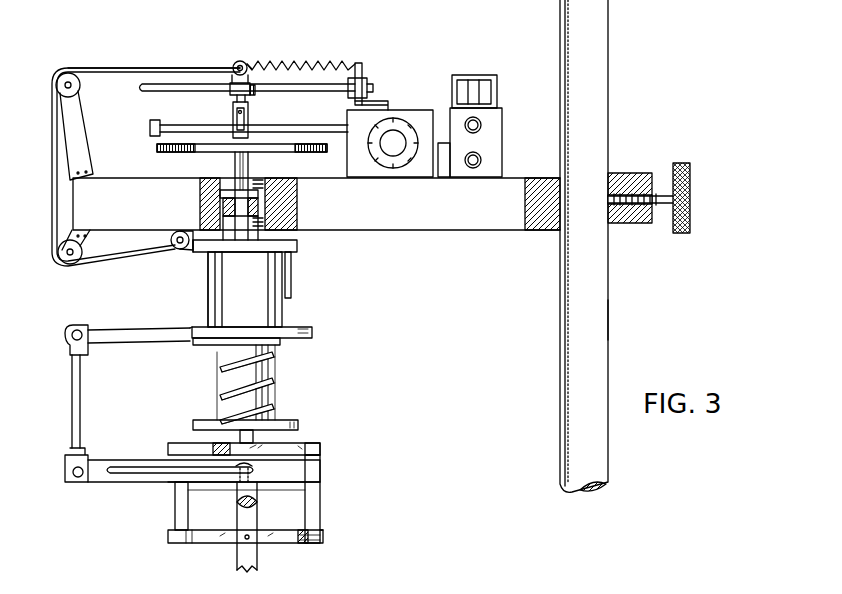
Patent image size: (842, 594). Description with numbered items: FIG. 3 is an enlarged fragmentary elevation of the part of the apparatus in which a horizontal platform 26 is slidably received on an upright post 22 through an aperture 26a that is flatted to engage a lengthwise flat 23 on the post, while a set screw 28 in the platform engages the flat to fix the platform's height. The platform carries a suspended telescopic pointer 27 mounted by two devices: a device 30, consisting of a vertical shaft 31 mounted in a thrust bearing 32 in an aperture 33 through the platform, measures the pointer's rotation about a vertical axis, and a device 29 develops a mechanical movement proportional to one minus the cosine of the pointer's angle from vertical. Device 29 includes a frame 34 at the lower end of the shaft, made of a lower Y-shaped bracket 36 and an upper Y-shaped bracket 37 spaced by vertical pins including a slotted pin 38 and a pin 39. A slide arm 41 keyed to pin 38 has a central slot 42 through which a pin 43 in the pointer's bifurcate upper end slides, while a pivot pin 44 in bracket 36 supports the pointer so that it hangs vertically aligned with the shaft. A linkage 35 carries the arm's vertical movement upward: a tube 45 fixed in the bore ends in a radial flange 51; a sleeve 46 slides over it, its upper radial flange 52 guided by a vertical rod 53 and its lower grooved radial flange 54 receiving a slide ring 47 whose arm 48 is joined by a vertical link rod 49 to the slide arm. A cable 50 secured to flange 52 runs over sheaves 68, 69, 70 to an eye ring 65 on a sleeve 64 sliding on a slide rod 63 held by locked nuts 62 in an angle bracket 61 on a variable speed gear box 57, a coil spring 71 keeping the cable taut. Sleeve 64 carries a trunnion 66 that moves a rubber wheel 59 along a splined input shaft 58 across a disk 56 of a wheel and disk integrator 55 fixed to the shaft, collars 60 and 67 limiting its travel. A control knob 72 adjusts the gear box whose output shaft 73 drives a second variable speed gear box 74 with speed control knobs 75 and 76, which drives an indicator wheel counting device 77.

The upright post 22 is at (592, 254).
The lengthwise flat 23 is at (609, 317).
The horizontal platform 26 is at (440, 222).
The aperture 26a is at (604, 182).
The telescopic pointer 27 is at (258, 560).
The set screw 28 is at (664, 188).
The device 29 is at (258, 387).
The device 30 is at (250, 195).
The vertical shaft 31 is at (235, 160).
The thrust bearing 32 is at (268, 186).
The aperture 33 is at (224, 188).
The frame 34 is at (332, 520).
The linkage 35 is at (178, 328).
The lower Y-shaped bracket 36 is at (292, 543).
The upper Y-shaped bracket 37 is at (320, 448).
The vertical pin 38 is at (320, 493).
The vertical pin 39 is at (174, 500).
The slide arm 41 is at (275, 478).
The central slot 42 is at (150, 465).
The pin 43 is at (241, 474).
The pivot pin 44 is at (245, 539).
The tube 45 is at (272, 360).
The sleeve 46 is at (280, 310).
The slide ring 47 is at (312, 333).
The arm 48 is at (130, 332).
The vertical link rod 49 is at (71, 392).
The cable 50 is at (53, 200).
The radial flange 51 is at (292, 418).
The radial flange 52 is at (298, 248).
The vertical rod 53 is at (291, 268).
The radial flange 54 is at (196, 330).
The wheel and disk integrator 55 is at (182, 52).
The disk 56 is at (311, 153).
The variable speed gear box 57 is at (418, 108).
The splined input shaft 58 is at (280, 124).
The rubber wheel 59 is at (236, 118).
The collar 60 is at (149, 128).
The angle bracket 61 is at (358, 62).
The locked nuts 62 is at (350, 96).
The slide rod 63 is at (285, 78).
The sleeve 64 is at (234, 63).
The eye ring 65 is at (240, 64).
The trunnion 66 is at (250, 101).
The collar 67 is at (256, 66).
The sheave 68 is at (172, 250).
The sheave 69 is at (60, 262).
The sheave 70 is at (70, 66).
The coil spring 71 is at (318, 61).
The control knob 72 is at (393, 126).
The output shaft 73 is at (440, 138).
The second variable speed gear box 74 is at (492, 116).
The speed control knob 75 is at (481, 127).
The speed control knob 76 is at (481, 160).
The indicator wheel counting device 77 is at (473, 75).